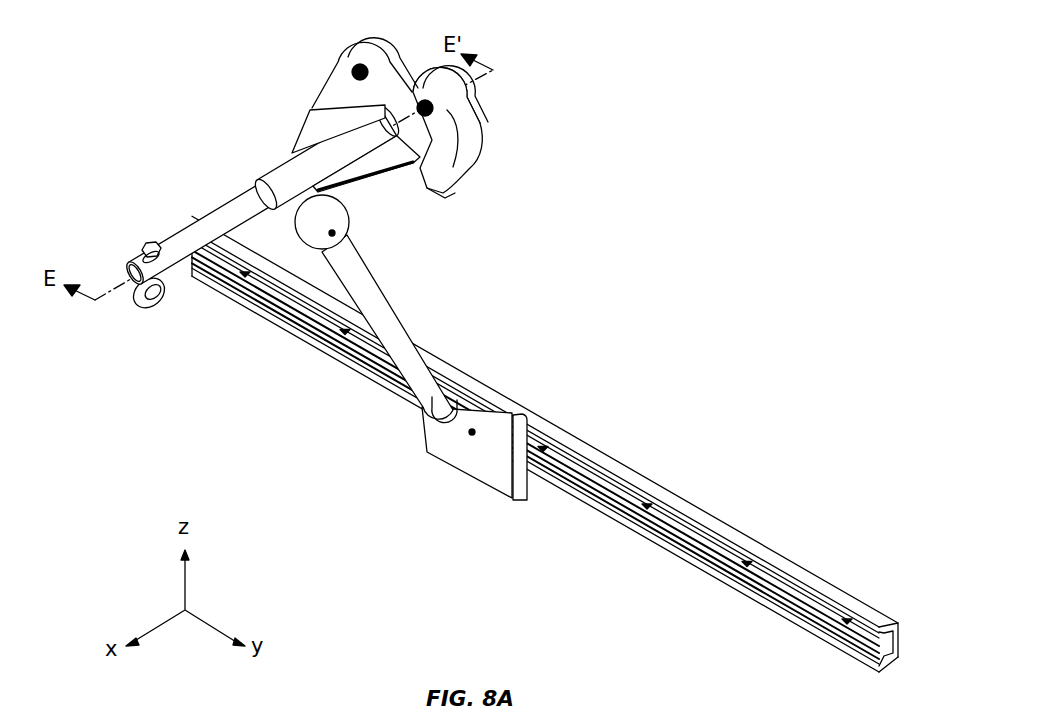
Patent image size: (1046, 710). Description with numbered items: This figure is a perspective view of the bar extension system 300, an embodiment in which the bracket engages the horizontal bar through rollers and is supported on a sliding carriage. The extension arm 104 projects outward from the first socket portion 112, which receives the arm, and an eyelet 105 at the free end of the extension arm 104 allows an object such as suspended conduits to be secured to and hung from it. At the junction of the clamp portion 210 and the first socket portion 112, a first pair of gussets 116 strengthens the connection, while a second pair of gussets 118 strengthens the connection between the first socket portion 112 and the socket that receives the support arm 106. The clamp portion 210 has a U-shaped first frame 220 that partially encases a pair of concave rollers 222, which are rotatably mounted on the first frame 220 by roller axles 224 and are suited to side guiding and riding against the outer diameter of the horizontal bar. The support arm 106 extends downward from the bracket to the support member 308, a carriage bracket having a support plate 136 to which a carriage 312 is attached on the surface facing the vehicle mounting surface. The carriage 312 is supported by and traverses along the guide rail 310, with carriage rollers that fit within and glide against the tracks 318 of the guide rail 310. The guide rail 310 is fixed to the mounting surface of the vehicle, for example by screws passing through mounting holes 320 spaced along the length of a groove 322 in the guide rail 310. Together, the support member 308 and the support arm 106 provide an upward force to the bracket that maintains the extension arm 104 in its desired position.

The extension arm 104 is at (200, 222).
The eyelet 105 is at (140, 308).
The support arm 106 is at (400, 330).
The first socket portion 112 is at (283, 170).
The first pair of gussets 116 is at (320, 130).
The second pair of gussets 118 is at (337, 190).
The support plate 136 is at (502, 477).
The clamp portion 210 is at (447, 193).
The first frame 220 is at (457, 162).
The rollers 222 is at (477, 110).
The roller axles 224 is at (358, 62).
The bar extension system 300 is at (700, 212).
The support member 308 is at (410, 468).
The guide rail 310 is at (720, 527).
The carriage 312 is at (527, 470).
The tracks 318 is at (900, 624).
The mounting holes 320 is at (752, 562).
The groove 322 is at (897, 648).